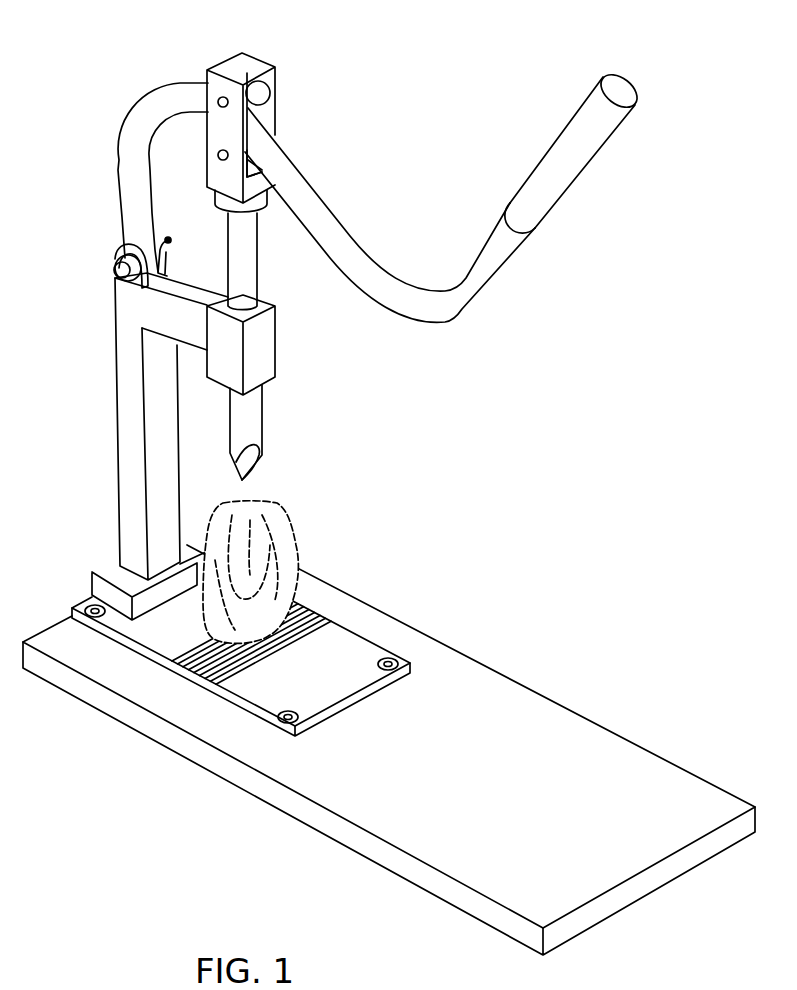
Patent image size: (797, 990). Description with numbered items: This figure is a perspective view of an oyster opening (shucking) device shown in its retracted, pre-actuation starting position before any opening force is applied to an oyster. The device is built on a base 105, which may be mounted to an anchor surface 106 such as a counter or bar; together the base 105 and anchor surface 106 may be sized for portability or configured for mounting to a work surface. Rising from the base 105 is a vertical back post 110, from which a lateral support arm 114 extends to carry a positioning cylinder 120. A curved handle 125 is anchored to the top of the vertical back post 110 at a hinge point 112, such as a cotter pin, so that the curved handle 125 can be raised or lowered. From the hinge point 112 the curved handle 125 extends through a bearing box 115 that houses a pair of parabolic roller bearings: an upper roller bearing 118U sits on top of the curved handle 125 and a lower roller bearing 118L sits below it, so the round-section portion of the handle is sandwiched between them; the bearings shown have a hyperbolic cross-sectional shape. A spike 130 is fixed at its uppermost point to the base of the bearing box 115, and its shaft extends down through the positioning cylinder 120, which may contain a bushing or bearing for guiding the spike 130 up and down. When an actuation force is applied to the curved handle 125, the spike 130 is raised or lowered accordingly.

The base 105 is at (248, 682).
The anchor surface 106 is at (316, 778).
The vertical back post 110 is at (124, 445).
The hinge point 112 is at (115, 264).
The lateral support arm 114 is at (160, 322).
The bearing box 115 is at (256, 58).
The upper parabolic roller bearing 118U is at (256, 95).
The lower parabolic roller bearing 118L is at (245, 153).
The positioning cylinder 120 is at (262, 340).
The curved handle 125 is at (495, 268).
The spike 130 is at (250, 409).